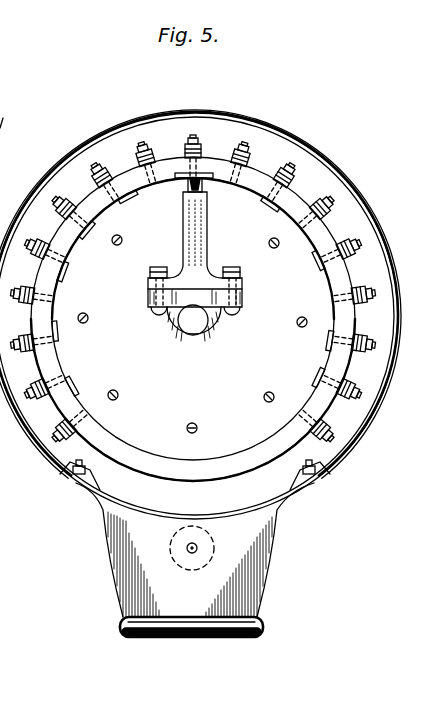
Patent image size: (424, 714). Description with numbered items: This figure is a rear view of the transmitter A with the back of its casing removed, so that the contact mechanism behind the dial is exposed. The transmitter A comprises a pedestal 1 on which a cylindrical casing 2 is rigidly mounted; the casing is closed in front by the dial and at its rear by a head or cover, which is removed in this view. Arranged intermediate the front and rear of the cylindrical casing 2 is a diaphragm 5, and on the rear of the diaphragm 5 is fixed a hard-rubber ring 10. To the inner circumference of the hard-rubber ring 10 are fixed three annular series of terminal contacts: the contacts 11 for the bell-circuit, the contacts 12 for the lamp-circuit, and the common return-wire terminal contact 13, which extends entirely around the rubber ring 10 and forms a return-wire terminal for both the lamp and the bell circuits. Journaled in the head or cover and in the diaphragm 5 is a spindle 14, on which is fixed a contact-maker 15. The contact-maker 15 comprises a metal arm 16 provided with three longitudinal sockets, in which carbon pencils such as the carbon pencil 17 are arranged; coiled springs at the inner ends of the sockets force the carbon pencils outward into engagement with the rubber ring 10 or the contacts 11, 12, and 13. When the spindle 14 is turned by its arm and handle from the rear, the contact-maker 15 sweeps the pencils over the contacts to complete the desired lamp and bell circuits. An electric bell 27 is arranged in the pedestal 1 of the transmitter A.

The pedestal 1 is at (195, 548).
The cylindrical casing 2 is at (97, 141).
The diaphragm 5 is at (192, 333).
The hard-rubber ring 10 is at (262, 447).
The terminal contacts for the bell-circuit 11 is at (210, 180).
The terminal contacts for the lamp-circuit 12 is at (66, 383).
The common return-wire terminal contact 13 is at (90, 417).
The spindle 14 is at (200, 325).
The contact-maker 15 is at (200, 236).
The metal arm 16 is at (183, 239).
The carbon pencil 17 is at (186, 190).
The electric bell 27 is at (172, 538).
The transmitter A is at (281, 120).